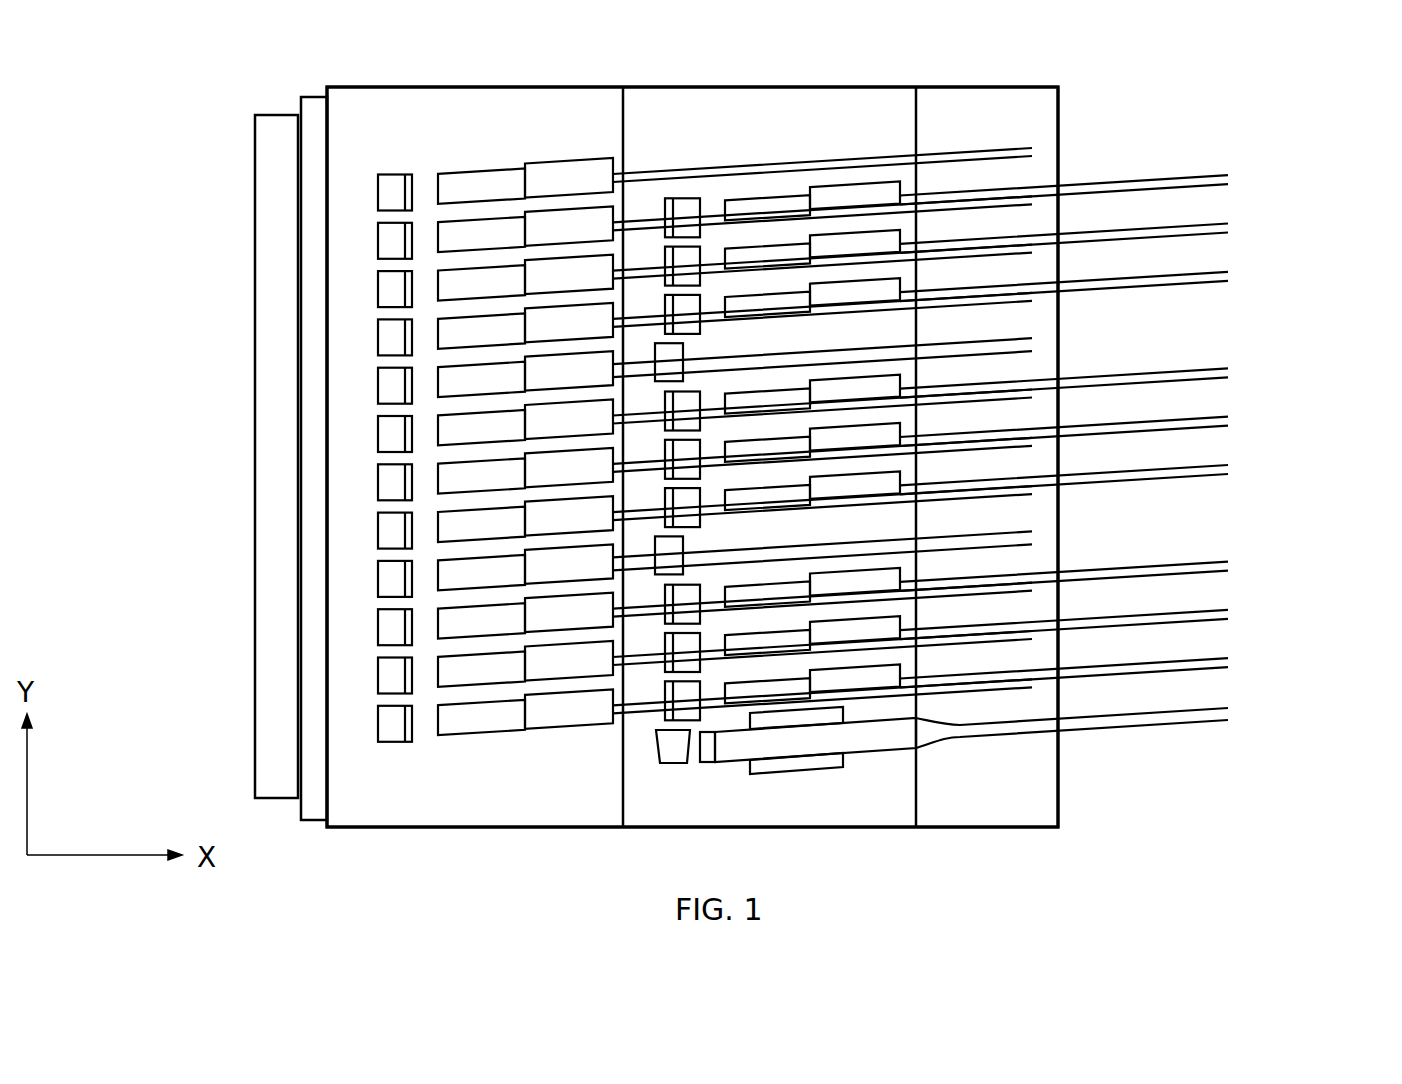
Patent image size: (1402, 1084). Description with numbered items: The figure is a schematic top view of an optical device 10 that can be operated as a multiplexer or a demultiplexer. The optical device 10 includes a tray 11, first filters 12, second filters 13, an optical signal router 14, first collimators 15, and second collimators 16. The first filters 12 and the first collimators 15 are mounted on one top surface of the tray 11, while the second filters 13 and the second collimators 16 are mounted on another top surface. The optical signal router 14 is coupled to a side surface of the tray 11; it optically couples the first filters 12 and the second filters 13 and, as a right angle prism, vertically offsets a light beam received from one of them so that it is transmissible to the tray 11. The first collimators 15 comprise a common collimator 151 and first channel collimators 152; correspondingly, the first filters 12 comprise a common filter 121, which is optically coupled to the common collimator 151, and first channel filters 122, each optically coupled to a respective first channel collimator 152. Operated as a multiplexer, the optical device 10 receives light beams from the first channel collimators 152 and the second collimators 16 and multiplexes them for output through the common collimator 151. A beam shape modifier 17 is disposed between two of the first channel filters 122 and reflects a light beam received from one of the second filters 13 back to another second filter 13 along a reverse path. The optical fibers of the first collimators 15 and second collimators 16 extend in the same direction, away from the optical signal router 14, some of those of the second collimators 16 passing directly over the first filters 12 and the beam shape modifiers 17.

The optical device 10 is at (132, 155).
The tray 11 is at (1070, 128).
The first filters 12 is at (1340, 685).
The common filter 121 is at (672, 774).
The first channel filters 122 is at (688, 236).
The second filters 13 is at (399, 213).
The optical signal router 14 is at (245, 347).
The first collimators 15 is at (1340, 820).
The common collimator 151 is at (863, 763).
The first channel collimators 152 is at (781, 232).
The second collimators 16 is at (500, 210).
The beam shape modifier 17 is at (695, 353).